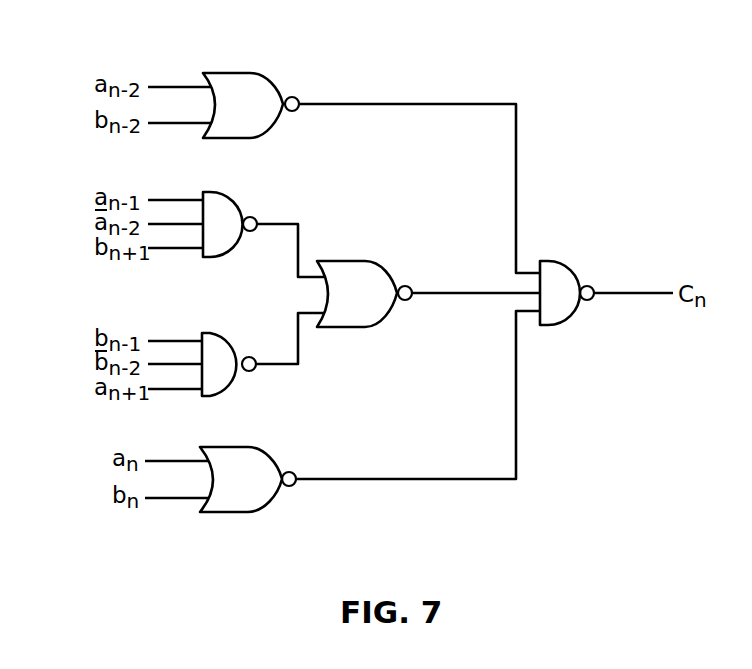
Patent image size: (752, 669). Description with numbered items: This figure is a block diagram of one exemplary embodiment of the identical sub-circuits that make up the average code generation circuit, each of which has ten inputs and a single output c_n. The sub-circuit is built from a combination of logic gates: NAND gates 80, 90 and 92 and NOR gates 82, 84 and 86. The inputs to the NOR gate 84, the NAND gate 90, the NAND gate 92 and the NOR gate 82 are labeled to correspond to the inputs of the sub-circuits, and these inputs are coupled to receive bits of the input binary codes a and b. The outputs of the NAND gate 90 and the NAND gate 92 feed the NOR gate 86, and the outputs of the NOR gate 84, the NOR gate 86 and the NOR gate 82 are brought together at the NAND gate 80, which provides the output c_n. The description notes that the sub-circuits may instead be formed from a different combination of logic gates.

The NOR gate 84 is at (257, 73).
The NAND gate 90 is at (228, 193).
The NAND gate 92 is at (216, 333).
The NOR gate 86 is at (350, 260).
The NAND gate 80 is at (558, 260).
The NOR gate 82 is at (252, 449).